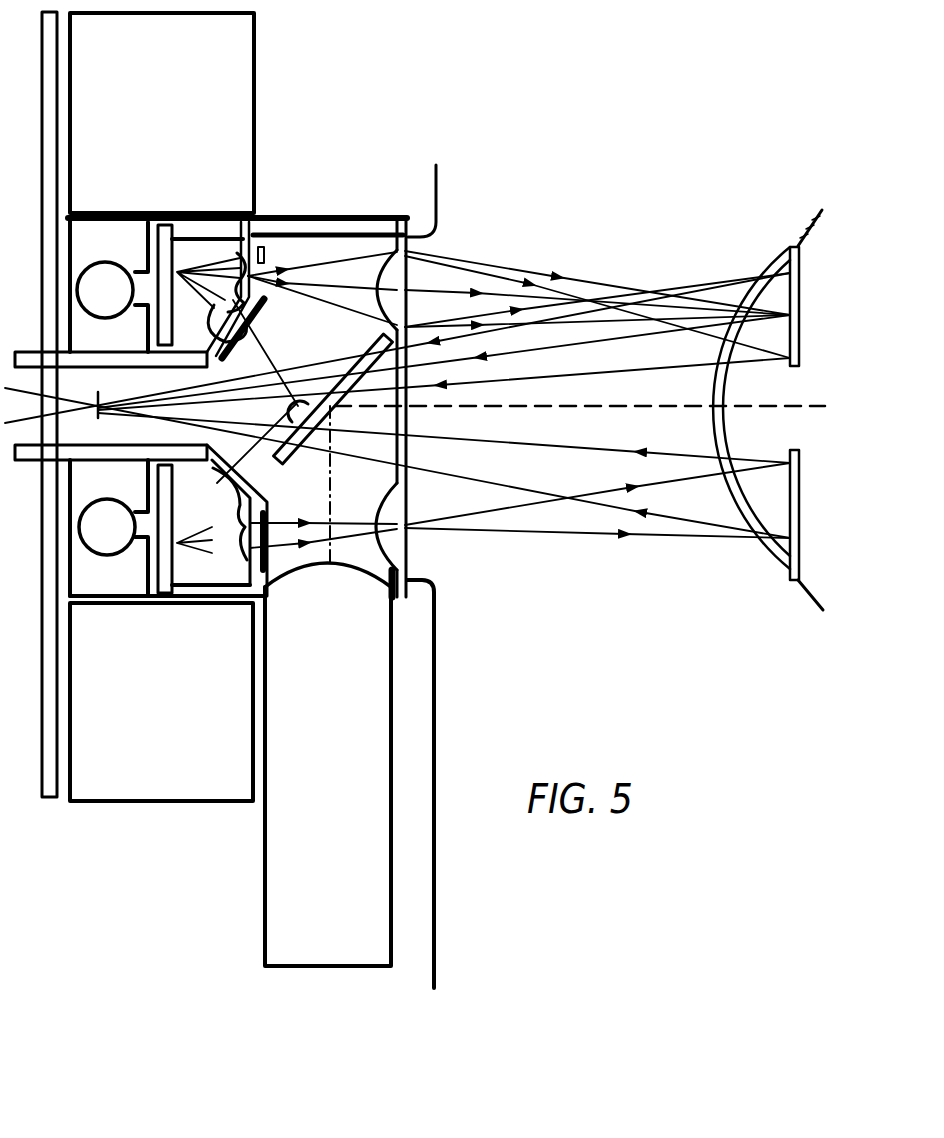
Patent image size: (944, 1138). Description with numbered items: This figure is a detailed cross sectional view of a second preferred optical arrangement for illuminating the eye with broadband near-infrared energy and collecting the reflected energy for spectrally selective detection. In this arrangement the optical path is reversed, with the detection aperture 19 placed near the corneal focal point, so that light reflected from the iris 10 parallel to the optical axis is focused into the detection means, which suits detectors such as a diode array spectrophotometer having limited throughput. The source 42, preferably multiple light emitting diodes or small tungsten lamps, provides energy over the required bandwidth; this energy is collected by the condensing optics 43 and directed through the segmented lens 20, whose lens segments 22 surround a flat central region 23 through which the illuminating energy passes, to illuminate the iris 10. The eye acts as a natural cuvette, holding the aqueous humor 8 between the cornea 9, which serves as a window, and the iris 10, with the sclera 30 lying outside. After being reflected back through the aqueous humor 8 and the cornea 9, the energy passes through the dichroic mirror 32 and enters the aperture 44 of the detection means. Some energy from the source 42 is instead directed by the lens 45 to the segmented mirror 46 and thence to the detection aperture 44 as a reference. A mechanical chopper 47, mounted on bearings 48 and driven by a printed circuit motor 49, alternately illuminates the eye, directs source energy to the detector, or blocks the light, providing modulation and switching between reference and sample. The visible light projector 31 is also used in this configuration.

The aqueous humor 8 is at (773, 512).
The cornea 9 is at (790, 566).
The iris 10 is at (797, 368).
The detection aperture 19 is at (415, 282).
The segmented lens 20 is at (410, 575).
The lens segments 22 is at (392, 543).
The flat central region 23 is at (410, 452).
The sclera 30 is at (806, 232).
The visible light projector 31 is at (265, 866).
The dichroic mirror 32 is at (290, 463).
The source 42 is at (245, 215).
The condensing optics 43 is at (267, 263).
The aperture of the detection means 44 is at (95, 412).
The lens 45 is at (160, 366).
The segmented mirror 46 is at (292, 395).
The mechanical chopper 47 is at (257, 240).
The bearings 48 is at (130, 338).
The printed circuit motor 49 is at (237, 127).